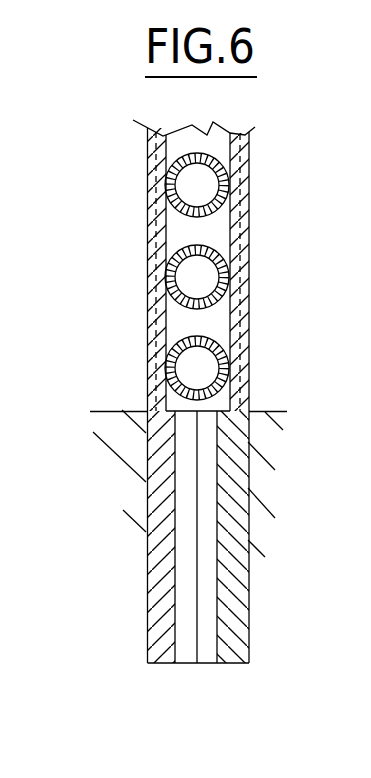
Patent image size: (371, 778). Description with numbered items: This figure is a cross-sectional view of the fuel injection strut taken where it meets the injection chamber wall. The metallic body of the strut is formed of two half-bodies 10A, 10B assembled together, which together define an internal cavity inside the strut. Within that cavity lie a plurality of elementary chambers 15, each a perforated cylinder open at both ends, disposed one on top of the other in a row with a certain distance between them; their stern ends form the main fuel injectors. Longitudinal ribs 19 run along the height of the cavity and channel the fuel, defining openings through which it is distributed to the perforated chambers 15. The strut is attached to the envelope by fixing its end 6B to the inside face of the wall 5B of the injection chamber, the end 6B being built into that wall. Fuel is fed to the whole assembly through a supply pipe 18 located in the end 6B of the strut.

The elementary chambers 15 is at (209, 267).
The half-body 10A is at (250, 247).
The half-body 10B is at (148, 258).
The longitudinal ribs 19 is at (243, 312).
The wall of the injection chamber 5B is at (100, 422).
The end of the injection strut 6B is at (153, 592).
The supply pipes 18 is at (182, 623).